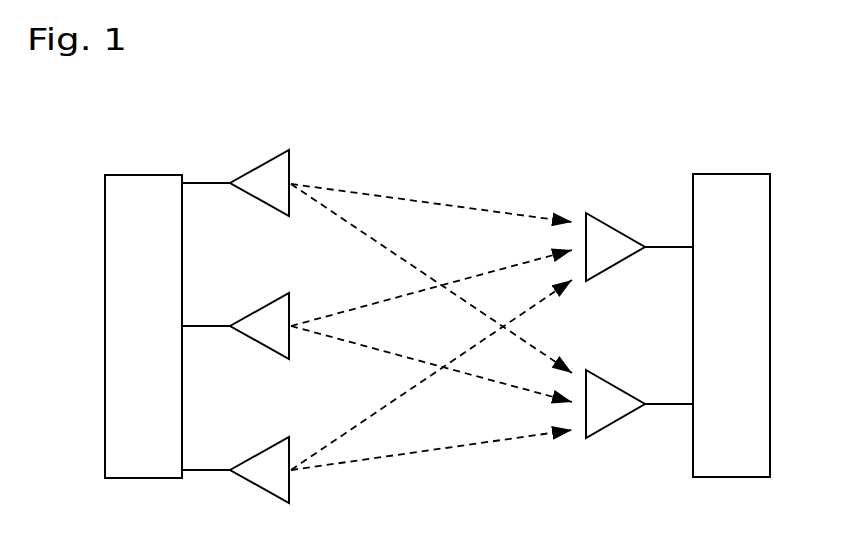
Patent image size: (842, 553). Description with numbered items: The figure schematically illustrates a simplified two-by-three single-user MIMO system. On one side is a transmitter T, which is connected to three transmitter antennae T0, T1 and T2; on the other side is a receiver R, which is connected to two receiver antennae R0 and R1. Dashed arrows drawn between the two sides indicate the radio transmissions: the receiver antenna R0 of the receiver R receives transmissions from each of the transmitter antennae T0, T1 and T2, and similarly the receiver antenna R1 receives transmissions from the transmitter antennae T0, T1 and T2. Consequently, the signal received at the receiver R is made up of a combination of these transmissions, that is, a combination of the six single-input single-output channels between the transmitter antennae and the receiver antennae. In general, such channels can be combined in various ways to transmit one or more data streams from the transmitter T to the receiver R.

The transmitter T is at (143, 326).
The receiver R is at (731, 325).
The transmitter antenna T0 is at (235, 183).
The transmitter antenna T1 is at (235, 326).
The transmitter antenna T2 is at (235, 470).
The receiver antenna R0 is at (639, 247).
The receiver antenna R1 is at (639, 404).